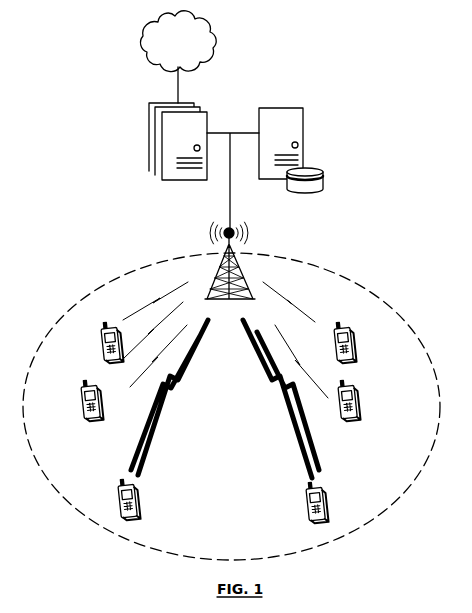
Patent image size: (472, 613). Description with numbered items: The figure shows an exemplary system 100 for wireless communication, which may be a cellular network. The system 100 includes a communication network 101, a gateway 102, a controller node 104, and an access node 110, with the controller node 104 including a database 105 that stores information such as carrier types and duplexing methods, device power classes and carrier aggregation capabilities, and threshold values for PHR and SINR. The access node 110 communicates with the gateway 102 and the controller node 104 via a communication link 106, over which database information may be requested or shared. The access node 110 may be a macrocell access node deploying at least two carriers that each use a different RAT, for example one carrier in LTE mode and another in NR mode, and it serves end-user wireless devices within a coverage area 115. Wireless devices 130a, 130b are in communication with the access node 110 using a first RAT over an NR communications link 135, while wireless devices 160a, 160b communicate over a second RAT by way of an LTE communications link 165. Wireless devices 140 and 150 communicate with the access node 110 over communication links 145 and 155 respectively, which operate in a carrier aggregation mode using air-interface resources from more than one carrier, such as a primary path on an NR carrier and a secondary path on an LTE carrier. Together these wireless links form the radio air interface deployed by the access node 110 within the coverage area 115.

The system 100 is at (250, 65).
The communication network 101 is at (190, 50).
The gateway 102 is at (157, 103).
The controller node 104 is at (303, 108).
The database 105 is at (322, 167).
The communication link 106 is at (230, 190).
The access node 110 is at (216, 276).
The coverage area 115 is at (278, 252).
The end-user wireless device 130a is at (99, 354).
The end-user wireless device 130b is at (84, 425).
The wireless link 135 is at (143, 302).
The end-user wireless device 140 is at (116, 508).
The communication link 145 is at (193, 383).
The end-user wireless device 150 is at (328, 512).
The communication link 155 is at (276, 412).
The end-user wireless device 160a is at (356, 360).
The end-user wireless device 160b is at (365, 403).
The wireless link 165 is at (285, 307).